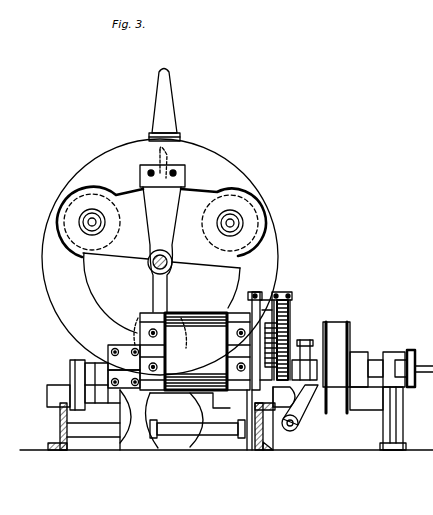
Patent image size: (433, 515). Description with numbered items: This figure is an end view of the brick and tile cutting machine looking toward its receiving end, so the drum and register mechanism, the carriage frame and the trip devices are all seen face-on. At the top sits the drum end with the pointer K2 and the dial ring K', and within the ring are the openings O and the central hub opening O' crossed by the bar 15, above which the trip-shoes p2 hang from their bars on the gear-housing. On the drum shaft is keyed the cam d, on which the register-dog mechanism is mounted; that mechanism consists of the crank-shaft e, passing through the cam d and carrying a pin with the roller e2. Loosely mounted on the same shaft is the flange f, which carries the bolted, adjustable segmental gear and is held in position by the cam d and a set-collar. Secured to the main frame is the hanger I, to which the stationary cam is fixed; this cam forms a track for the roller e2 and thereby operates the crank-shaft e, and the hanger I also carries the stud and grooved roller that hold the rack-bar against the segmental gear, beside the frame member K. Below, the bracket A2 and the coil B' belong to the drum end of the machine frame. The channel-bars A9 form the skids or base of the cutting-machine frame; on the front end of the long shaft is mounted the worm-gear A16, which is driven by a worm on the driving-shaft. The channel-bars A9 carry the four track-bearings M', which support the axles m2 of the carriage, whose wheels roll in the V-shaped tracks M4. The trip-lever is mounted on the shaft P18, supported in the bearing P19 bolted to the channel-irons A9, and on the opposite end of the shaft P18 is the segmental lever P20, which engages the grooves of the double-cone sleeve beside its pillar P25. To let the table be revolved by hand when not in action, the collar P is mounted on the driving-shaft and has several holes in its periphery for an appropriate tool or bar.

The pointer K2 is at (172, 113).
The dial ring / rack frame K' is at (179, 259).
The trip-shoe p2 is at (169, 158).
The openings O is at (161, 260).
The hub opening O' is at (173, 262).
The cross bar 15 is at (120, 257).
The bracket A2 is at (137, 320).
The coil B' is at (196, 338).
The hanger I is at (258, 292).
The frame K is at (276, 325).
The crank-shaft e is at (289, 318).
The roller e2 is at (289, 332).
The cam d is at (281, 340).
The flange f is at (325, 322).
The V-shaped track M4 is at (70, 367).
The axle m2 is at (96, 383).
The track-bearing M' is at (46, 396).
The channel-bar A9 is at (60, 425).
The worm-gear A16 is at (167, 448).
The collar P is at (412, 387).
The pillar P25 is at (318, 388).
The segmental lever P20 is at (307, 392).
The shaft P18 is at (299, 423).
The bearing P19 is at (268, 443).